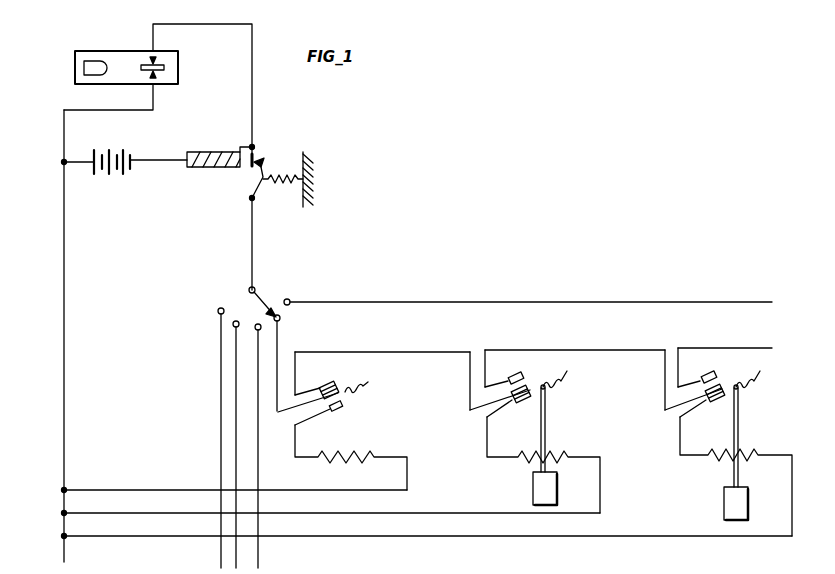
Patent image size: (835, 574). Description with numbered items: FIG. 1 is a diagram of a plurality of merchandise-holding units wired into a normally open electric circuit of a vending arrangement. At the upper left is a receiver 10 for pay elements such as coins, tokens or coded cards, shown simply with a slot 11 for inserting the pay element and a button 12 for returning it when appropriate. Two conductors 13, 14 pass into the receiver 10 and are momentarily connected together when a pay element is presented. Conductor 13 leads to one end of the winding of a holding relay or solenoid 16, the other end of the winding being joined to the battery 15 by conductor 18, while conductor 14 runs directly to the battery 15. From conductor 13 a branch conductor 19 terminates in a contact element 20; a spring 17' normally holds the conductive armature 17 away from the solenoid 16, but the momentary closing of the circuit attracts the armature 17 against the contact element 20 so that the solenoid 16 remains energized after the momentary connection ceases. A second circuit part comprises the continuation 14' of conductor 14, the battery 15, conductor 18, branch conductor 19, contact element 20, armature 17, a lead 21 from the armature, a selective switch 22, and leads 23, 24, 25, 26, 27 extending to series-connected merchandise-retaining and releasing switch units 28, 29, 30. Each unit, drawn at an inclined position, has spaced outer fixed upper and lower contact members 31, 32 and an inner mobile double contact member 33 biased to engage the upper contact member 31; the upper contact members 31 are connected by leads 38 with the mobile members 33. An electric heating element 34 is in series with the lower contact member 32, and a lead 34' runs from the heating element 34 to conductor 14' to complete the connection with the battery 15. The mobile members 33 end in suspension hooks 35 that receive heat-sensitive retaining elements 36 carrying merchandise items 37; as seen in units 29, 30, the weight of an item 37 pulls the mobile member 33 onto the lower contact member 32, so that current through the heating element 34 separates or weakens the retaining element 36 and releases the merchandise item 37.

The receiver 10 is at (70, 69).
The slot 11 is at (165, 68).
The button 12 is at (92, 60).
The conductor 13 is at (153, 36).
The conductor 14 is at (126, 98).
The continuation of conductor 14' is at (89, 336).
The battery 15 is at (117, 185).
The holding relay or solenoid 16 is at (201, 144).
The conductive armature 17 is at (283, 158).
The spring 17' is at (295, 186).
The conductor 18 is at (134, 158).
The branch conductor 19 is at (254, 148).
The contact element 20 is at (255, 158).
The lead 21 is at (252, 244).
The selective switch 22 is at (268, 283).
The lead 23 is at (326, 302).
The lead 24 is at (279, 333).
The lead 25 is at (221, 372).
The lead 26 is at (236, 388).
The lead 27 is at (258, 405).
The merchandise-retaining and releasing switch unit 28 is at (382, 381).
The merchandise-retaining and releasing switch unit 29 is at (575, 380).
The merchandise-retaining and releasing switch unit 30 is at (724, 374).
The upper fixed contact member 31 is at (313, 389).
The lower fixed contact member 32 is at (318, 407).
The mobile double contact member 33 is at (296, 410).
The electric heating element 34 is at (543, 476).
The lead 34' is at (427, 503).
The suspension hook 35 is at (553, 377).
The retaining or suspension element 36 is at (546, 420).
The merchandise item 37 is at (532, 491).
The lead 38 is at (408, 352).